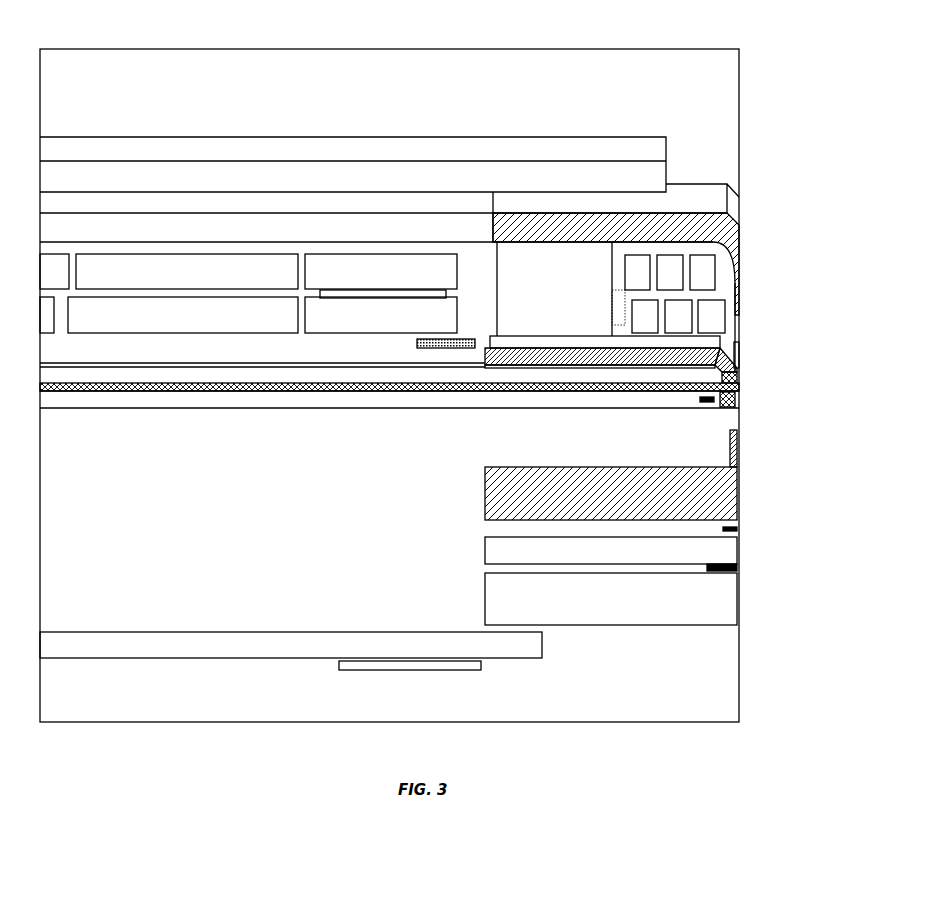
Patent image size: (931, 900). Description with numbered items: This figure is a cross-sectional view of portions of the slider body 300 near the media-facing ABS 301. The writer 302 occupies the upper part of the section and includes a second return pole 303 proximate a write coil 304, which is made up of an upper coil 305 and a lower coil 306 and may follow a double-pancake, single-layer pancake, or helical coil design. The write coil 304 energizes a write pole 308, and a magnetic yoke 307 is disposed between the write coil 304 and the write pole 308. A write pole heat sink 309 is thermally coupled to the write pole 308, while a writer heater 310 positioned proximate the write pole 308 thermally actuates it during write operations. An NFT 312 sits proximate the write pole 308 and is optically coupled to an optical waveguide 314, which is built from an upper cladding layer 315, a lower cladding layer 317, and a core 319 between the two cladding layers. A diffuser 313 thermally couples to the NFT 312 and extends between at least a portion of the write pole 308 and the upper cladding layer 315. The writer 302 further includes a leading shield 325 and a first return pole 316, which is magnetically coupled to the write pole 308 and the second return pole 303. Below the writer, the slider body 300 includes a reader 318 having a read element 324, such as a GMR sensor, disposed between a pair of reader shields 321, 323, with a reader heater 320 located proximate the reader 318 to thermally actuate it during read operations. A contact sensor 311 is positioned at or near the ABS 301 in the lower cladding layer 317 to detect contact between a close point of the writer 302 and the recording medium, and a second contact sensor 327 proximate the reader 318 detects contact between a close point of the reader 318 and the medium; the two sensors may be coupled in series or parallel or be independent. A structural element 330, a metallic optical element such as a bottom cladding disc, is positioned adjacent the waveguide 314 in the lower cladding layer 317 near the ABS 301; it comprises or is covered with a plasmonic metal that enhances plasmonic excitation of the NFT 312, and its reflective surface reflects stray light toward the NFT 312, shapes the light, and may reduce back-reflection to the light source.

The slider body 300 is at (643, 48).
The ABS 301 is at (740, 93).
The writer 302 is at (408, 246).
The second return pole 303 is at (740, 236).
The write coil 304 is at (583, 283).
The upper coil 305 is at (615, 289).
The lower coil 306 is at (632, 314).
The magnetic yoke 307 is at (556, 345).
The write pole 308 is at (741, 378).
The write pole heat sink 309 is at (738, 352).
The writer heater 310 is at (415, 343).
The contact sensor 311 is at (705, 401).
The NFT 312 is at (720, 378).
The diffuser 313 is at (543, 367).
The optical waveguide 314 is at (180, 409).
The upper cladding layer 315 is at (255, 378).
The first return pole 316 is at (735, 494).
The lower cladding layer 317 is at (252, 395).
The reader 318 is at (468, 573).
The core 319 is at (305, 393).
The reader heater 320 is at (410, 672).
The reader shield 321 is at (738, 554).
The reader shield 323 is at (738, 600).
The read element 324 is at (740, 568).
The leading shield 325 is at (740, 452).
The contact sensor 327 is at (738, 529).
The structural element 330 is at (728, 410).